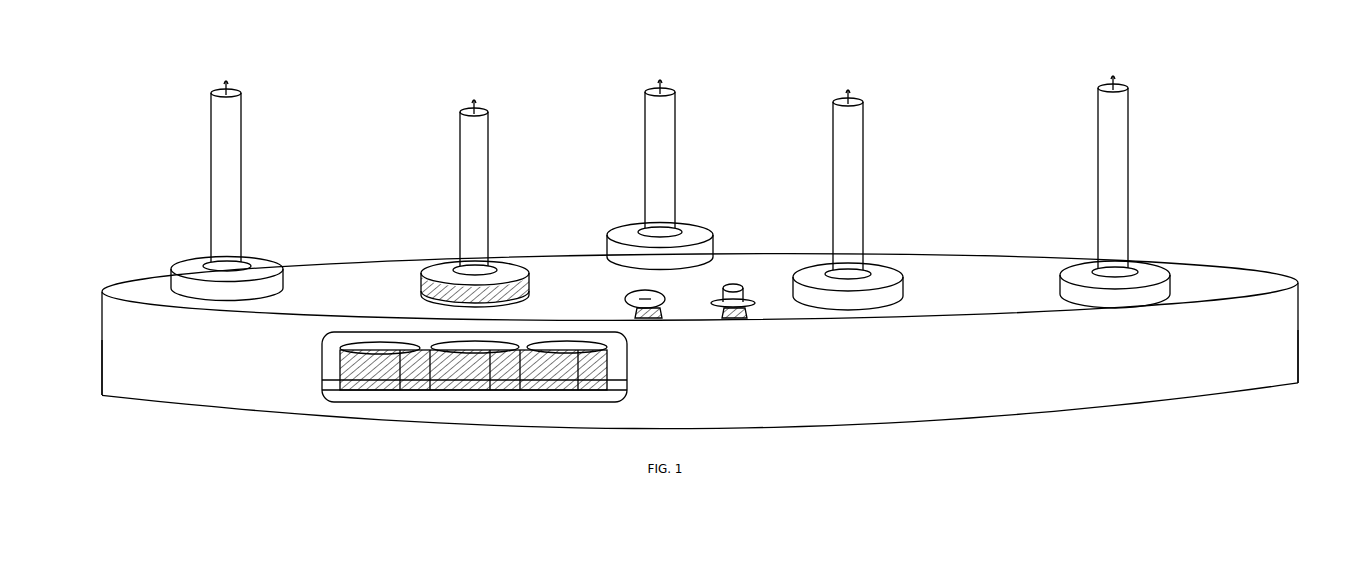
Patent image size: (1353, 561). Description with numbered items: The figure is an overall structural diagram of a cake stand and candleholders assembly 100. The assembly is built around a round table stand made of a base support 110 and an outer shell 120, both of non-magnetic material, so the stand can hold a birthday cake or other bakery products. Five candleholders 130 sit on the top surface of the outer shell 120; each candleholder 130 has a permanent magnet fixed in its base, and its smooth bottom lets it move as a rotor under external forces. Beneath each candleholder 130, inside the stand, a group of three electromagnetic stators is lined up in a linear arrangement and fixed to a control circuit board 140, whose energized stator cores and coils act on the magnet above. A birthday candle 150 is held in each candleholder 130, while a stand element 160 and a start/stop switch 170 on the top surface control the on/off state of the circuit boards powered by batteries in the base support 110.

The assembly 100 is at (688, 256).
The base support 110 is at (674, 383).
The outer shell 120 is at (1246, 277).
The candleholder 130 is at (1076, 268).
The control circuit board 140 is at (676, 398).
The birthday candle 150 is at (655, 157).
The stand 160 is at (629, 296).
The switch 170 is at (746, 285).